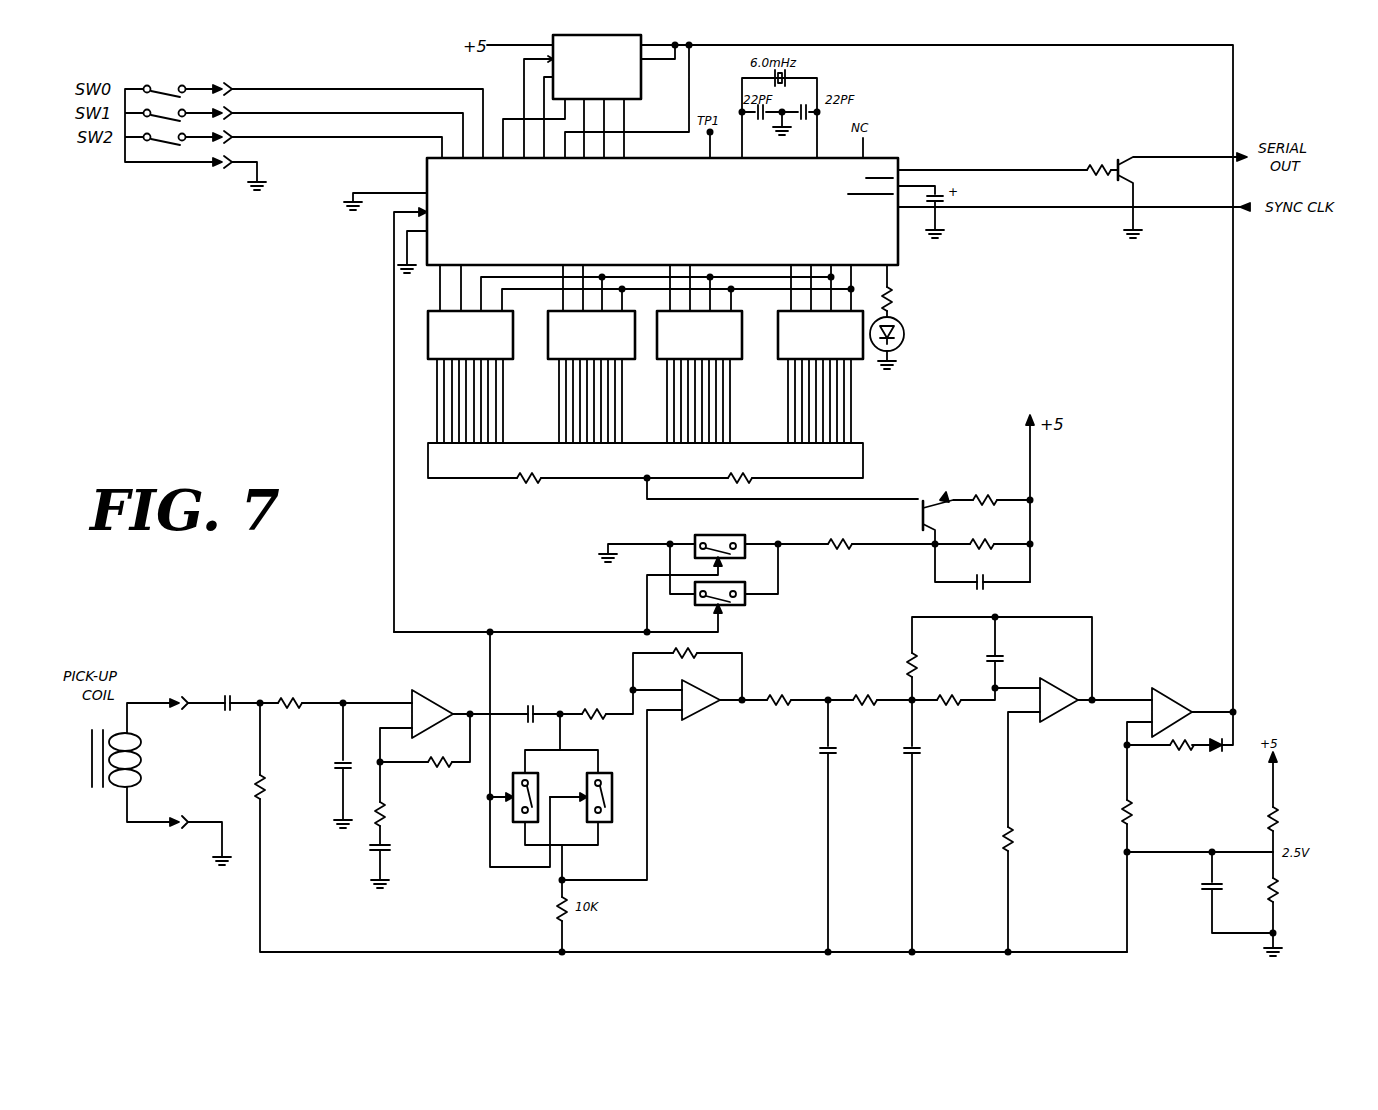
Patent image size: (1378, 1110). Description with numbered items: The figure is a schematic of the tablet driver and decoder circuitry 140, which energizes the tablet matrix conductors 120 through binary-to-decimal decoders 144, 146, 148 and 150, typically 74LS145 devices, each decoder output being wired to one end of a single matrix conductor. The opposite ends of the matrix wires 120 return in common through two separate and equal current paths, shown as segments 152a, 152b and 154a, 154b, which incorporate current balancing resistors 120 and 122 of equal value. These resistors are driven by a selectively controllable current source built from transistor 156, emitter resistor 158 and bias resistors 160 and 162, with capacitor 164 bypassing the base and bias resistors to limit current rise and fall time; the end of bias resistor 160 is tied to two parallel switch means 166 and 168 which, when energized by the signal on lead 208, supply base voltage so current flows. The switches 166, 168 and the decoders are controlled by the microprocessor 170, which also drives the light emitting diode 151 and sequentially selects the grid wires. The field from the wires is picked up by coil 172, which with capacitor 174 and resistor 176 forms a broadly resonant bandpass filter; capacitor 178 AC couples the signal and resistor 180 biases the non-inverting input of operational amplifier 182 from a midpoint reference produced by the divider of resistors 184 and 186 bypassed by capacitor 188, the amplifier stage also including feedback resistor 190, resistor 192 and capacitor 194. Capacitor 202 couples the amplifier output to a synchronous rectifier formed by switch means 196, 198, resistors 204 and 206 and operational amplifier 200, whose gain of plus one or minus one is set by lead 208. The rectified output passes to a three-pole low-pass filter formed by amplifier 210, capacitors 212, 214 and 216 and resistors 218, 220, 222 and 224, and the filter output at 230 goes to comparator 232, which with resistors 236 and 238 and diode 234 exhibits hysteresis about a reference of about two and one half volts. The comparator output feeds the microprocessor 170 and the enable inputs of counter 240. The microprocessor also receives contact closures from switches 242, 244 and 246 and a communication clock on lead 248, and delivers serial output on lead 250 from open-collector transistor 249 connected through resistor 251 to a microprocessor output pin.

The switch 242 is at (163, 86).
The switch 244 is at (163, 110).
The switch 246 is at (163, 134).
The counter 240 is at (610, 56).
The microprocessor unit 170 is at (619, 223).
The serial signal lead 250 is at (937, 170).
The resistor 251 is at (1099, 168).
The open-collector transistor 249 is at (1138, 174).
The lead 248 is at (1003, 208).
The light emitting diode 151 is at (904, 330).
The binary-to-decimal decoder 144 is at (480, 352).
The binary-to-decimal decoder 146 is at (601, 352).
The binary-to-decimal decoder 148 is at (709, 352).
The binary-to-decimal decoder 150 is at (788, 356).
The tablet matrix conductors 120 is at (851, 402).
The current balancing resistor 122 is at (728, 470).
The current return path 154a is at (863, 460).
The current return path 154b is at (781, 488).
The current return path 152a is at (435, 482).
The current return path 152b is at (610, 504).
The transistor 156 is at (930, 500).
The emitter resistor 158 is at (998, 500).
The bias resistor 160 is at (833, 550).
The bias resistor 162 is at (952, 553).
The capacitor 164 is at (1002, 574).
The switch means 166 is at (745, 536).
The switch means 168 is at (745, 603).
The lead 208 is at (530, 632).
The circuitry 140 is at (333, 379).
The coil 172 is at (143, 761).
The capacitor 178 is at (224, 712).
The resistor 176 is at (288, 712).
The capacitor 174 is at (341, 758).
The resistor 180 is at (266, 789).
The operational amplifier 182 is at (426, 692).
The feedback resistor 190 is at (452, 760).
The resistor 192 is at (380, 814).
The capacitor 194 is at (390, 851).
The switch means 196 is at (498, 811).
The switch means 198 is at (598, 822).
The capacitor 202 is at (538, 714).
The resistor 204 is at (588, 718).
The feedback resistor 206 is at (672, 658).
The operational amplifier 200 is at (700, 720).
The resistor 218 is at (786, 707).
The resistor 220 is at (863, 710).
The resistor 222 is at (945, 710).
The resistor 224 is at (910, 665).
The capacitor 216 is at (990, 662).
The amplifier 210 is at (1056, 722).
The capacitor 212 is at (822, 758).
The capacitor 214 is at (908, 760).
The filter output 230 is at (1108, 700).
The comparator 232 is at (1175, 694).
The diode 234 is at (1228, 738).
The resistor 238 is at (1182, 760).
The resistor 236 is at (1121, 810).
The resistor 184 is at (1269, 813).
The resistor 186 is at (1270, 898).
The capacitor 188 is at (1204, 893).